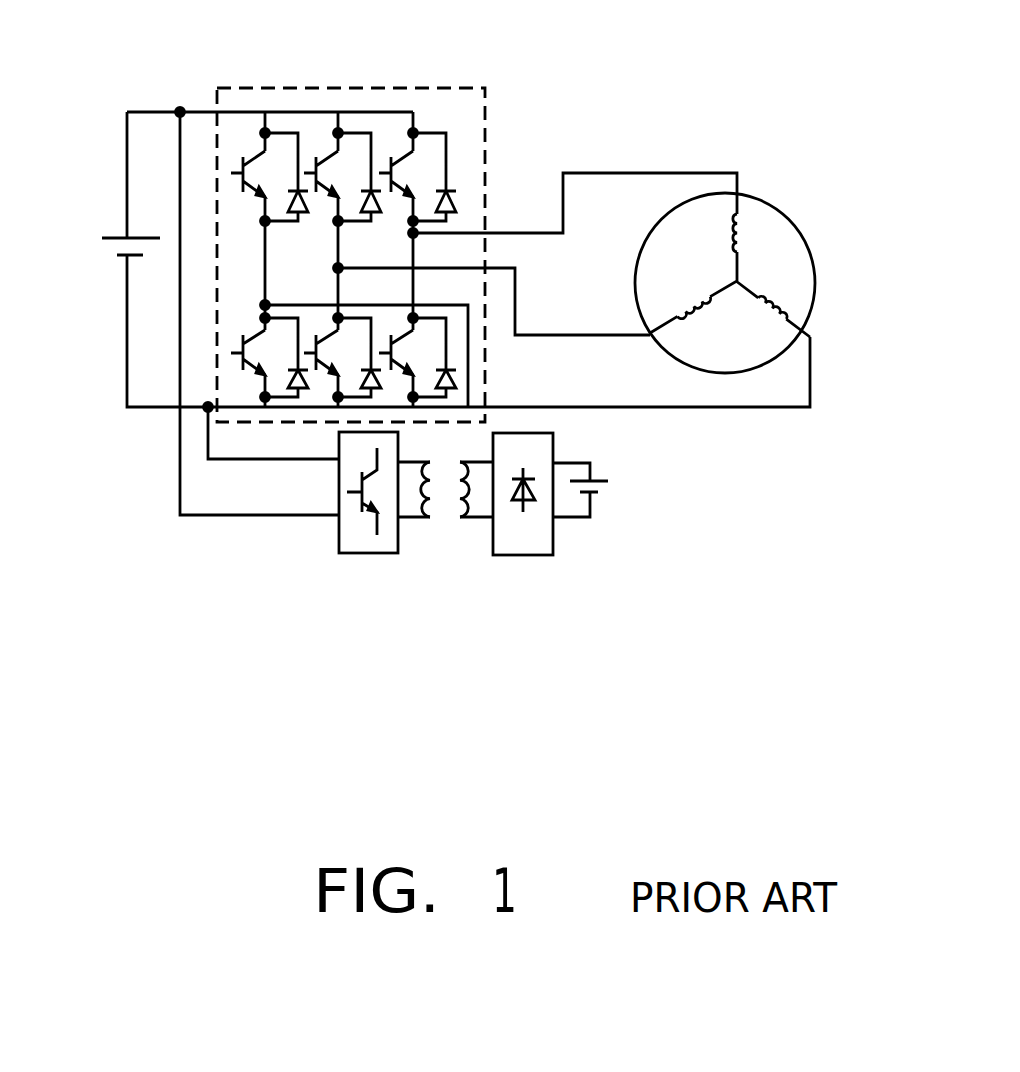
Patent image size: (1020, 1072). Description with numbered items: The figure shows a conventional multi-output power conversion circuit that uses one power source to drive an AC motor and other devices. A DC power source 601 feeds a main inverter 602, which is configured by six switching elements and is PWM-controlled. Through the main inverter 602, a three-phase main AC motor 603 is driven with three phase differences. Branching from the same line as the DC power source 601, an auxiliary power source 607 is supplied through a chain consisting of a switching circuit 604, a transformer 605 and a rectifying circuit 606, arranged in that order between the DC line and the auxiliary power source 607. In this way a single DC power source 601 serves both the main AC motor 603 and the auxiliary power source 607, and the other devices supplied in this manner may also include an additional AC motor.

The DC power source 601 is at (108, 252).
The main inverter 602 is at (390, 88).
The three-phase main AC motor 603 is at (803, 228).
The switching circuit 604 is at (366, 553).
The transformer 605 is at (447, 508).
The rectifying circuit 606 is at (530, 555).
The auxiliary power source 607 is at (607, 502).